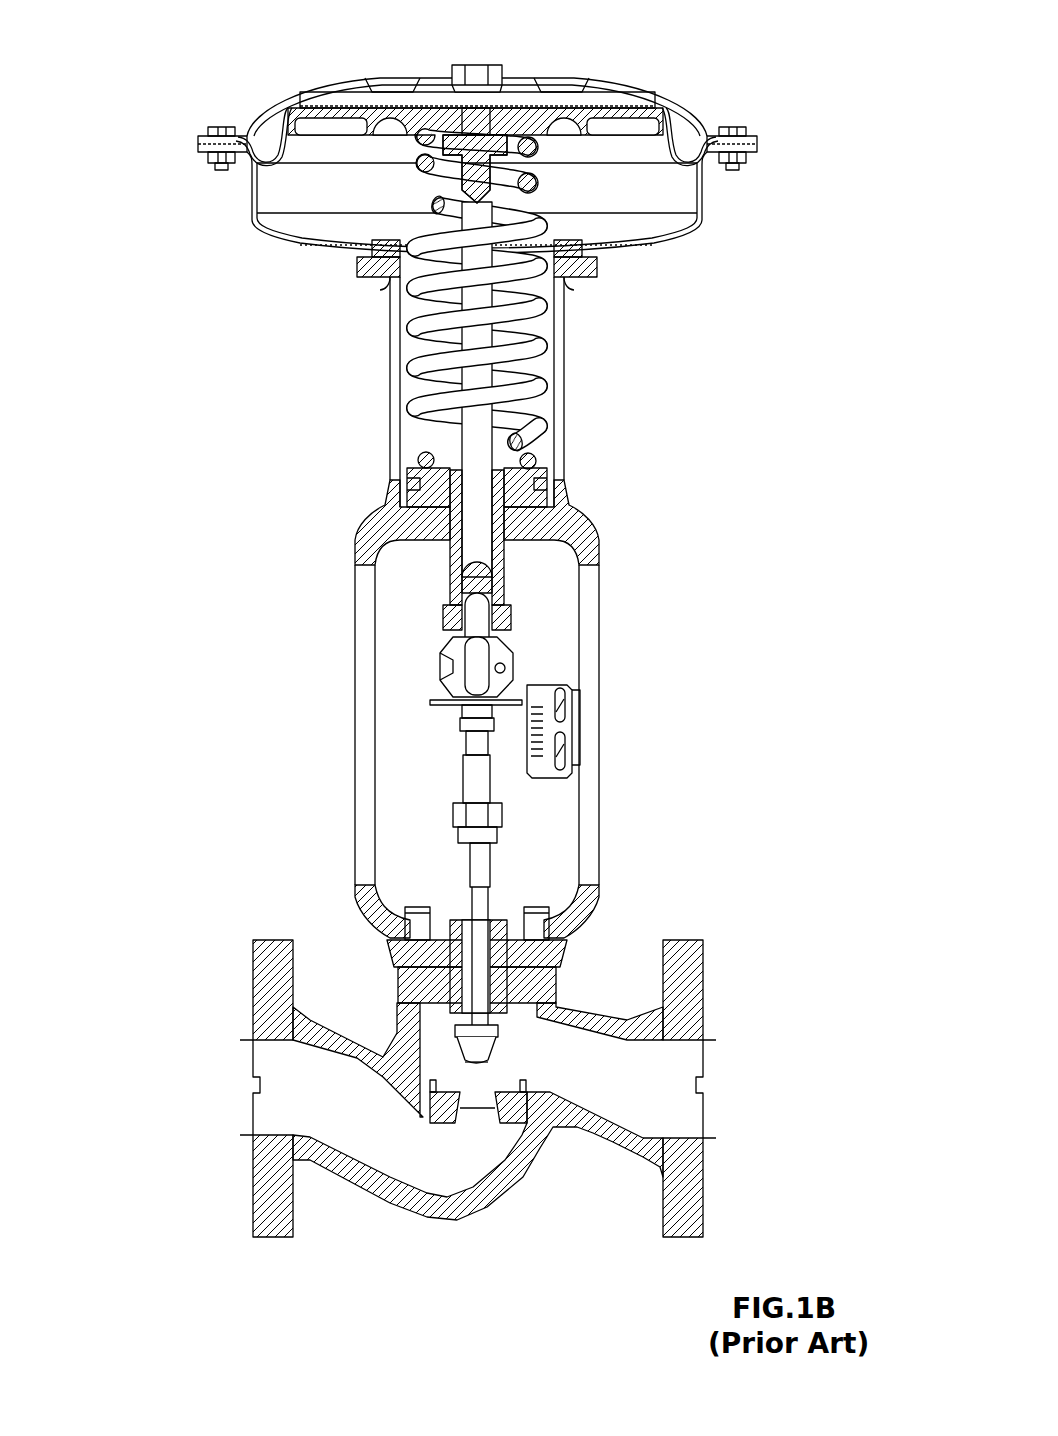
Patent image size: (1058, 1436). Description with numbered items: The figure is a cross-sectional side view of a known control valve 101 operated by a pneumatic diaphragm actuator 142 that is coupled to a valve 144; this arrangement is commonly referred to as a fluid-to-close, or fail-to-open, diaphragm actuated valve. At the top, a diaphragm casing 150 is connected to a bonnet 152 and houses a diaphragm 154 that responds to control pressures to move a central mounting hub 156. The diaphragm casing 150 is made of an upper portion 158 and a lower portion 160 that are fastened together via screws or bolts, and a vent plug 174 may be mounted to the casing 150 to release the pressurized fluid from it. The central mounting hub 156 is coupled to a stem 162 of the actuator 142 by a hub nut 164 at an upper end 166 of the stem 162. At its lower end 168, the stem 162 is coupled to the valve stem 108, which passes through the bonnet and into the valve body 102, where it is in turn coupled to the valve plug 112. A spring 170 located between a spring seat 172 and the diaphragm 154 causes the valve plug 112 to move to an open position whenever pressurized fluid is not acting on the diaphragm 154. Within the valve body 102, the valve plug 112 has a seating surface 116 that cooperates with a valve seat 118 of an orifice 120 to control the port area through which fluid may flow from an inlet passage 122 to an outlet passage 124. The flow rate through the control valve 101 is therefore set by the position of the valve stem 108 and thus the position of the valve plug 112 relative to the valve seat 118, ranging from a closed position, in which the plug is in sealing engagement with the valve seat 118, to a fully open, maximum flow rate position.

The control valve 101 is at (165, 30).
The valve body 102 is at (484, 1113).
The valve stem 108 is at (403, 918).
The valve plug 112 is at (477, 1064).
The seating surface 116 is at (503, 1031).
The valve seat 118 is at (521, 1086).
The orifice 120 is at (462, 1118).
The inlet passage 122 is at (252, 1079).
The outlet passage 124 is at (705, 1079).
The diaphragm actuator 142 is at (758, 126).
The valve 144 is at (750, 991).
The diaphragm casing 150 is at (263, 104).
The bonnet 152 is at (392, 389).
The diaphragm 154 is at (700, 163).
The central mounting hub 156 is at (447, 115).
The upper portion 158 is at (692, 104).
The lower portion 160 is at (252, 230).
The stem 162 is at (482, 528).
The hub nut 164 is at (530, 110).
The upper end 166 is at (587, 312).
The lower end 168 is at (505, 856).
The spring 170 is at (540, 445).
The spring seat 172 is at (432, 491).
The vent plug 174 is at (488, 66).